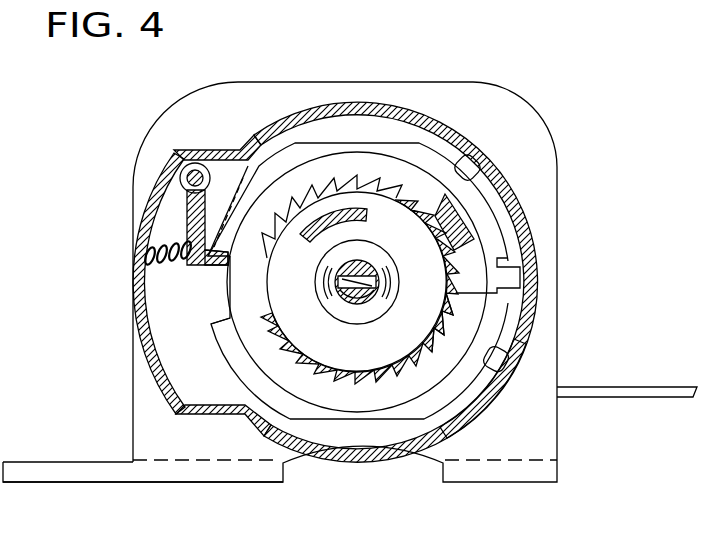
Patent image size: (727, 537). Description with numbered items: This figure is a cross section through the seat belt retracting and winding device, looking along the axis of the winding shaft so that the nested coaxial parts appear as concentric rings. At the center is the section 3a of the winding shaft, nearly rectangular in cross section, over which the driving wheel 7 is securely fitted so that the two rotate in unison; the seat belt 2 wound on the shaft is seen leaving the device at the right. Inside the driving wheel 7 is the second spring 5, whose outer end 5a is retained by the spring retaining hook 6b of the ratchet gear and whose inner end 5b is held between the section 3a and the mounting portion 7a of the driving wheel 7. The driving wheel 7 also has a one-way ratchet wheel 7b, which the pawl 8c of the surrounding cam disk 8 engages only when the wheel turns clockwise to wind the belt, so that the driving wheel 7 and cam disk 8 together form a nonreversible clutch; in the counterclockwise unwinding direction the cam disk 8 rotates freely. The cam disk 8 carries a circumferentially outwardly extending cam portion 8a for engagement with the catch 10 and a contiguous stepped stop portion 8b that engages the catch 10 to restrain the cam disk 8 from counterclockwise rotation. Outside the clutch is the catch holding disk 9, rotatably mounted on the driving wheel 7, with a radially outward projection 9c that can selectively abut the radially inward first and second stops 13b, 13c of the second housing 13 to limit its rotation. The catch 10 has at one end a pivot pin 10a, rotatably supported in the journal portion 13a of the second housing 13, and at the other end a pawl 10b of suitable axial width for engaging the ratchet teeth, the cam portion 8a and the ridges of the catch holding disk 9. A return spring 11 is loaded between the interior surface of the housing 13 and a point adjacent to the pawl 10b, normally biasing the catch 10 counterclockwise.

The seat belt 2 is at (645, 397).
The section of the winding shaft 3a is at (336, 296).
The second spring 5 is at (385, 254).
The outer end of the second spring 5a is at (365, 207).
The inner end of the second spring 5b is at (340, 281).
The spring retaining hook 6b is at (366, 214).
The driving wheel 7 is at (373, 377).
The mounting portion of the driving wheel 7a is at (383, 258).
The one-way ratchet wheel 7b is at (422, 365).
The cam disk 8 is at (375, 153).
The cam portion 8a is at (236, 214).
The stop or stepped portion 8b is at (217, 262).
The pawl of the cam disk 8c is at (470, 254).
The catch holding disk 9 is at (273, 160).
The projection of the catch holding disk 9c is at (527, 290).
The catch 10 is at (187, 238).
The pivot pin 10a is at (183, 170).
The pawl of the catch 10b is at (192, 263).
The return spring 11 is at (157, 267).
The second housing 13 is at (150, 201).
The journal portion 13a is at (170, 195).
The first projection or stop 13b is at (471, 170).
The second projection or stop 13c is at (502, 372).